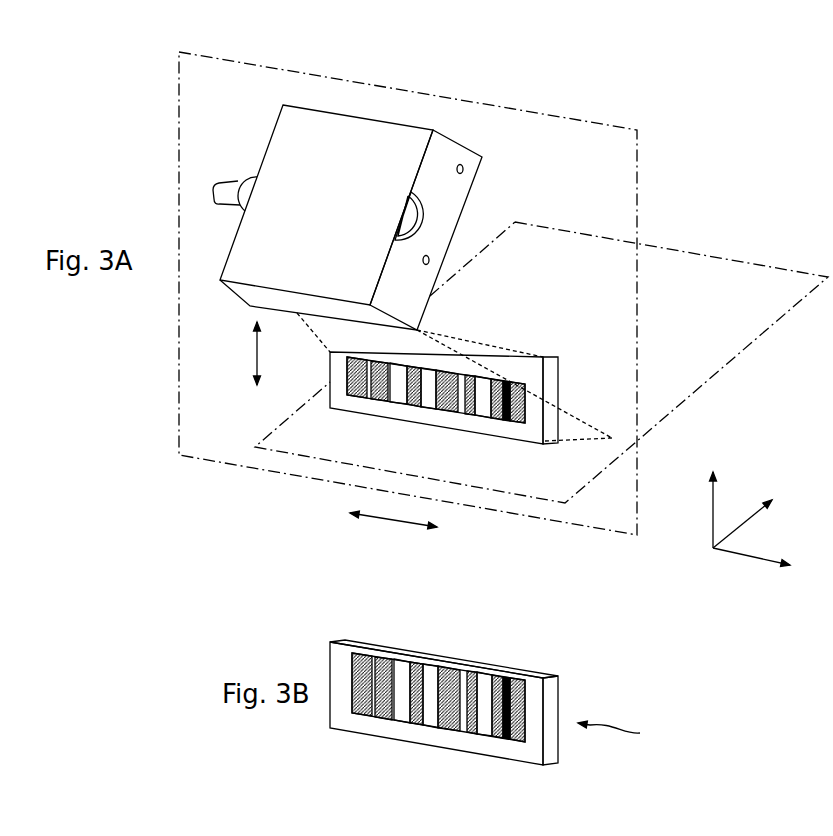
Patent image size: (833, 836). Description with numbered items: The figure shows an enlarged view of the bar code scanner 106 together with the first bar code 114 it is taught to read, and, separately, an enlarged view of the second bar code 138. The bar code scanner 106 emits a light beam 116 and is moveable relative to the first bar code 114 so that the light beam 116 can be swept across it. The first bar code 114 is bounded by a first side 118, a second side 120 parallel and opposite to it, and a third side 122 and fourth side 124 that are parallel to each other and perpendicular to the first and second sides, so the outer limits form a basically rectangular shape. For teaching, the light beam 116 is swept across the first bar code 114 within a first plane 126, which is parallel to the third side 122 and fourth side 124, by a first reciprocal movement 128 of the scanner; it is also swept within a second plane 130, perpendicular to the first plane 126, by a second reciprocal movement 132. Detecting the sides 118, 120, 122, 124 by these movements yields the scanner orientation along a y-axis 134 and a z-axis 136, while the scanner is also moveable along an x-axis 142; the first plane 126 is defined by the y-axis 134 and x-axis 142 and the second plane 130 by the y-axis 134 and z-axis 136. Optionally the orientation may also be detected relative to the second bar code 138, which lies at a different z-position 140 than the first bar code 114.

In FIG. 3A, the bar code scanner 106 is at (288, 145).
In FIG. 3A, the second plane 130 is at (407, 87).
In FIG. 3A, the first plane 126 is at (697, 250).
In FIG. 3A, the first bar code 114 is at (540, 352).
In FIG. 3A, the first side 118 is at (350, 370).
In FIG. 3A, the fourth side 124 is at (509, 357).
In FIG. 3A, the light beam 116 is at (573, 410).
In FIG. 3A, the third side 122 is at (452, 410).
In FIG. 3A, the second side 120 is at (523, 403).
In FIG. 3A, the second reciprocal movement 132 is at (257, 348).
In FIG. 3A, the first reciprocal movement 128 is at (392, 522).
In FIG. 3A, the z-axis 136 is at (713, 513).
In FIG. 3A, the x-axis 142 is at (737, 527).
In FIG. 3A, the y-axis 134 is at (738, 558).
In FIG. 3B, the second bar code 138 is at (542, 668).
In FIG. 3B, the z-position 140 is at (625, 733).